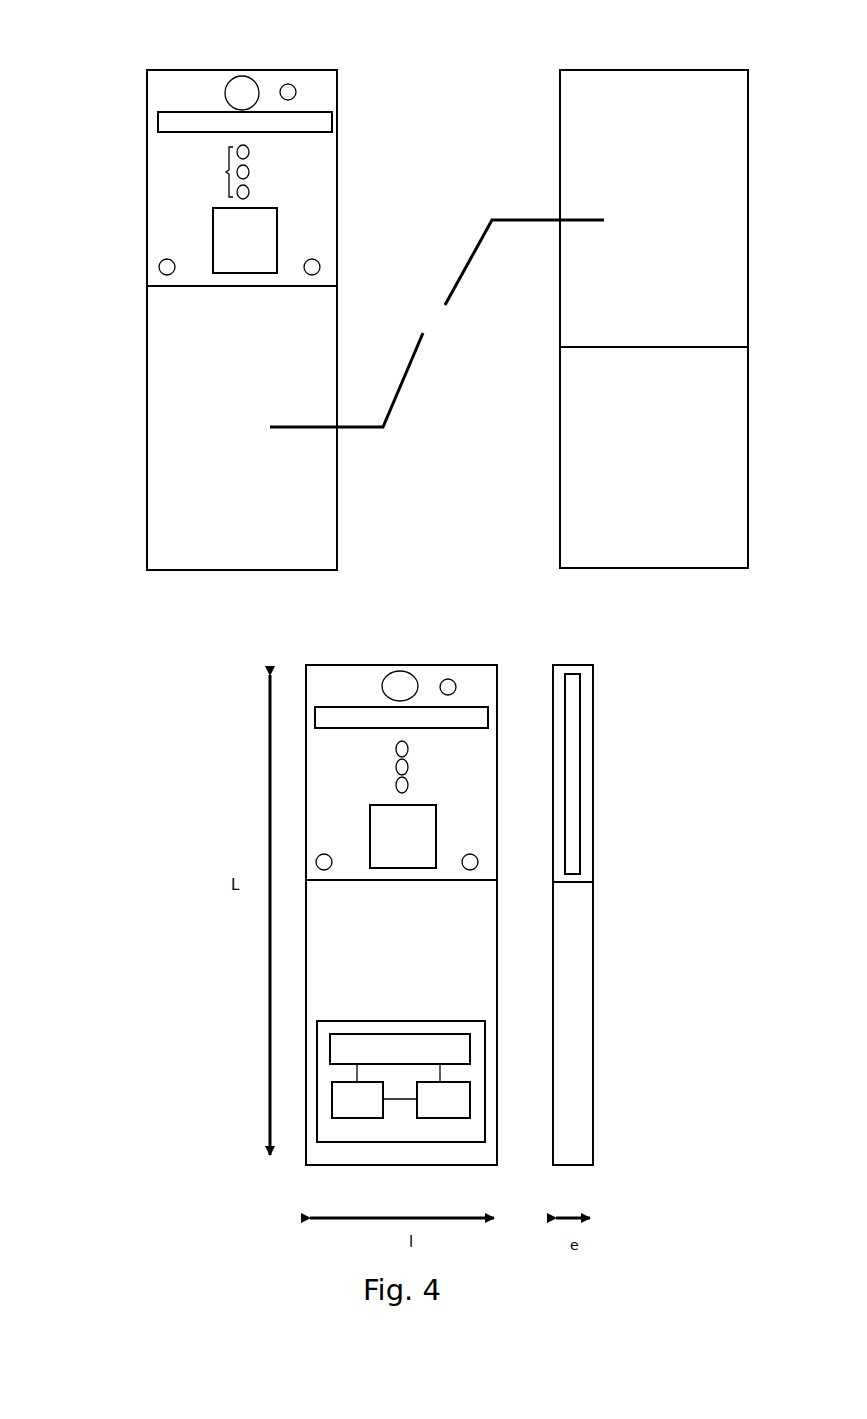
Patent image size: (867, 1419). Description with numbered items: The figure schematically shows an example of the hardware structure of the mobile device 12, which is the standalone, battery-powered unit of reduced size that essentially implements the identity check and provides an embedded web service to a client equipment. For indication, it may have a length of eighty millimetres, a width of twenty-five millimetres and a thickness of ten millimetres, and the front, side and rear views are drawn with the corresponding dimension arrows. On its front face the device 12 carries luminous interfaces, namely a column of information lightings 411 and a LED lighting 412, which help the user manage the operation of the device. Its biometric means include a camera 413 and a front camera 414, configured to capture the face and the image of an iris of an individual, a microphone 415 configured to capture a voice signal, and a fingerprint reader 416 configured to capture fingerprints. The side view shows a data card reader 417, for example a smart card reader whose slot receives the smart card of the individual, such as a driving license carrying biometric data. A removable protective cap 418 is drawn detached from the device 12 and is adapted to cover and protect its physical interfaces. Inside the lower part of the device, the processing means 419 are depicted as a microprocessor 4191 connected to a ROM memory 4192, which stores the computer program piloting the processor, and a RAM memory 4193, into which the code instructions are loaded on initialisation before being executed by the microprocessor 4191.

The mobile device 12 is at (128, 469).
The information lightings 411 is at (213, 168).
The LED lighting 412 is at (158, 265).
The camera 413 is at (240, 90).
The front camera 414 is at (166, 118).
The microphone 415 is at (288, 86).
The fingerprint reader 416 is at (224, 225).
The data card reader 417 is at (570, 773).
The removable protective cap 418 is at (437, 323).
The processing unit 419 is at (330, 1128).
The microprocessor 4191 is at (340, 1050).
The ROM memory 4192 is at (340, 1088).
The RAM memory 4193 is at (440, 1110).